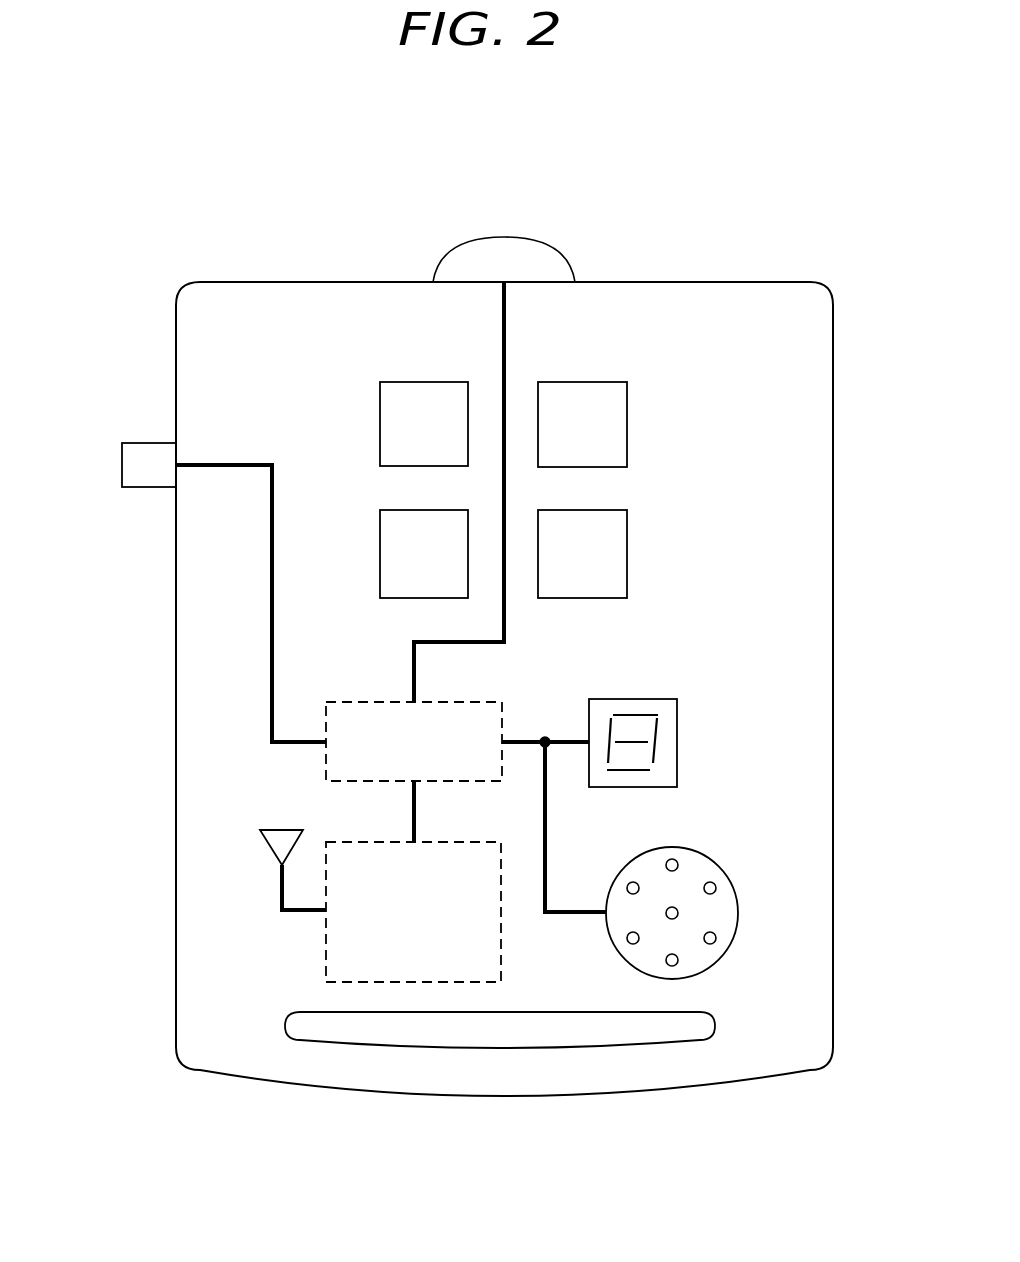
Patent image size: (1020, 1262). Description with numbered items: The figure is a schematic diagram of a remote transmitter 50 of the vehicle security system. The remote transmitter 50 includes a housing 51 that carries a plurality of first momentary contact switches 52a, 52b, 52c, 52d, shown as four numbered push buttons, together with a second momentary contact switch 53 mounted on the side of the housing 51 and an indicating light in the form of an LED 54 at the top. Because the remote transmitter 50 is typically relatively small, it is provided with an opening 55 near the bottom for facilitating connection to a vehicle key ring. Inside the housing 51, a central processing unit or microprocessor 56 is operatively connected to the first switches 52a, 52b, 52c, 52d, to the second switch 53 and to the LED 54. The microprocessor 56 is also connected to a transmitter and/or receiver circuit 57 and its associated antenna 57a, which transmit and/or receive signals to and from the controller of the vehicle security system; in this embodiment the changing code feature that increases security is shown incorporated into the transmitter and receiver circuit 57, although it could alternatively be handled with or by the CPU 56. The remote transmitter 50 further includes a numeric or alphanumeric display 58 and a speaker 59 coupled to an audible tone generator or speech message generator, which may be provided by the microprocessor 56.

The remote transmitter 50 is at (768, 182).
The housing 51 is at (834, 372).
The first momentary contact switch 52a is at (380, 424).
The first momentary contact switch 52b is at (627, 424).
The first momentary contact switch 52c is at (380, 552).
The first momentary contact switch 52d is at (627, 555).
The second momentary contact switch 53 is at (122, 466).
The LED 54 is at (560, 252).
The opening 55 is at (715, 1026).
The central processing unit 56 is at (350, 702).
The transmitter and/or receiver circuit 57 is at (326, 962).
The antenna 57a is at (282, 890).
The display 58 is at (678, 742).
The speaker 59 is at (738, 913).